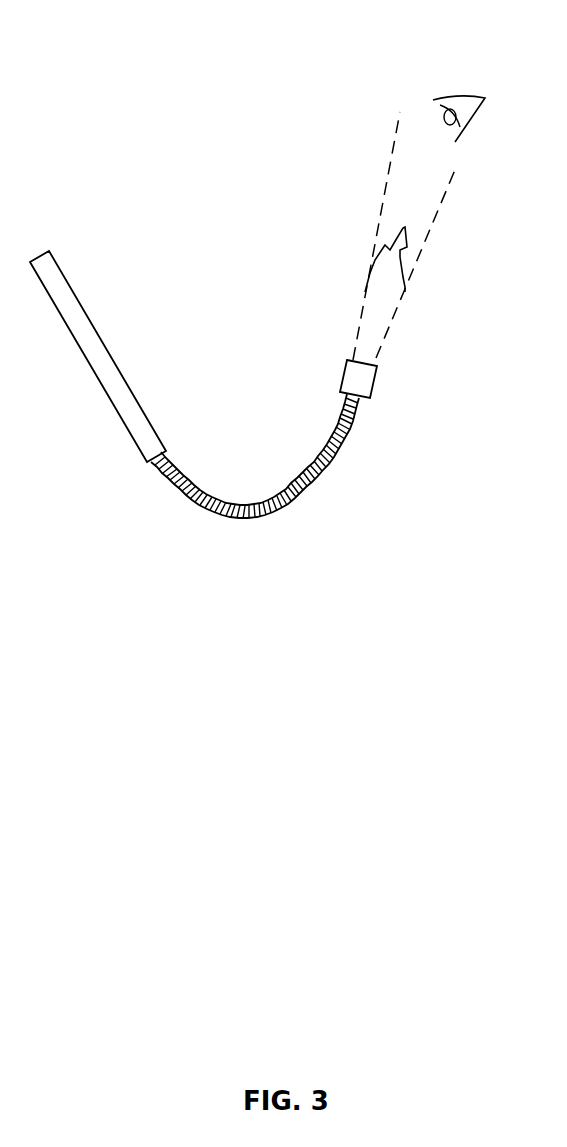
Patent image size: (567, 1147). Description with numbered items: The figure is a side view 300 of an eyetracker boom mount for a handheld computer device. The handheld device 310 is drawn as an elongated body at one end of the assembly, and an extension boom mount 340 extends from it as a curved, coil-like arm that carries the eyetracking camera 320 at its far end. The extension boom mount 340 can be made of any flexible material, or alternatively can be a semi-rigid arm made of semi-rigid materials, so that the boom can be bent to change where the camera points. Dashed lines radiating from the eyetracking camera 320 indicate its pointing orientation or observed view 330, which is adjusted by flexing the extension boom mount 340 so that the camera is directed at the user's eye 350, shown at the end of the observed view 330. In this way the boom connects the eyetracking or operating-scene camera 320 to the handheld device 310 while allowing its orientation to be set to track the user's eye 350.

The side view 300 is at (303, 705).
The handheld device 310 is at (56, 260).
The eyetracking camera 320 is at (358, 363).
The observed view 330 is at (396, 244).
The extension boom mount 340 is at (313, 487).
The user's eye 350 is at (473, 100).